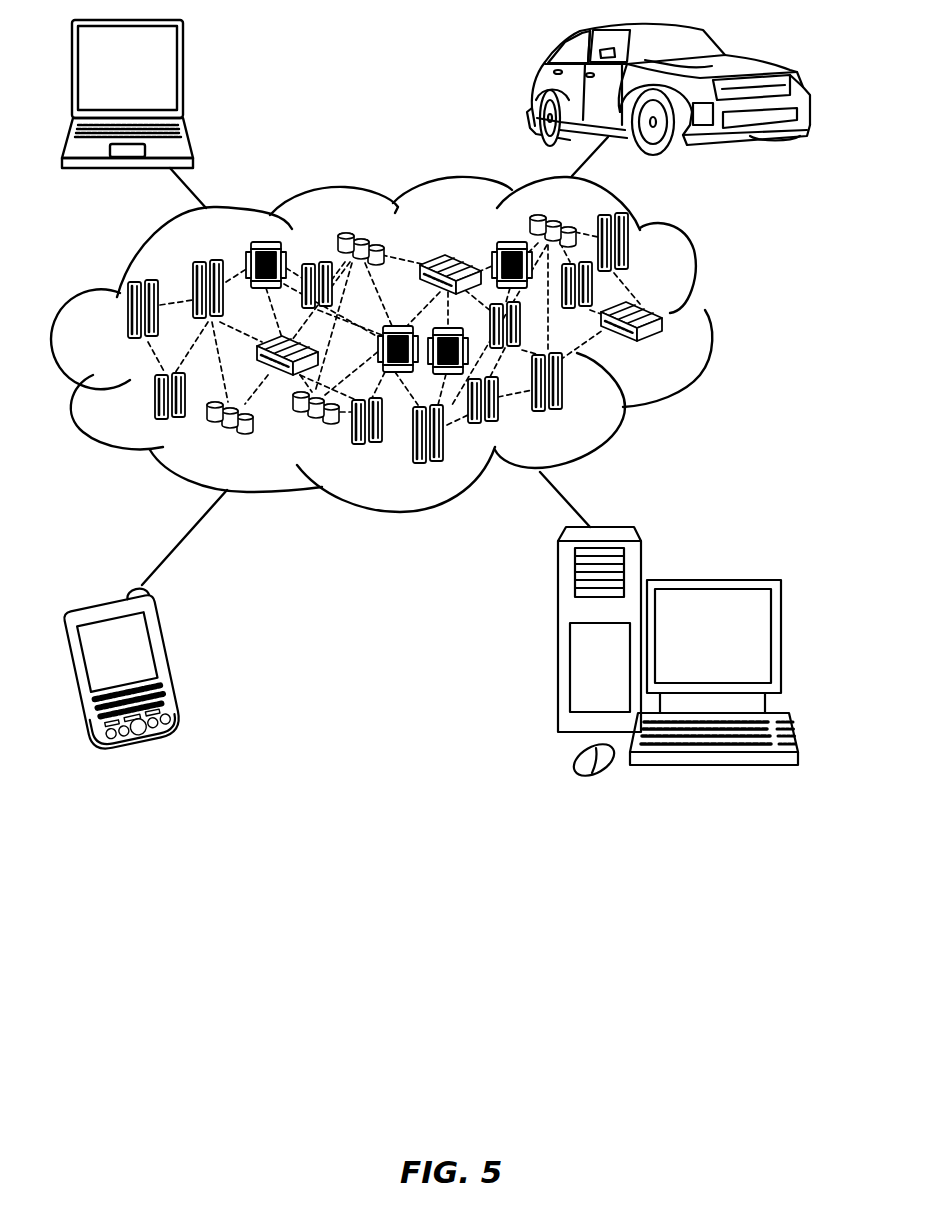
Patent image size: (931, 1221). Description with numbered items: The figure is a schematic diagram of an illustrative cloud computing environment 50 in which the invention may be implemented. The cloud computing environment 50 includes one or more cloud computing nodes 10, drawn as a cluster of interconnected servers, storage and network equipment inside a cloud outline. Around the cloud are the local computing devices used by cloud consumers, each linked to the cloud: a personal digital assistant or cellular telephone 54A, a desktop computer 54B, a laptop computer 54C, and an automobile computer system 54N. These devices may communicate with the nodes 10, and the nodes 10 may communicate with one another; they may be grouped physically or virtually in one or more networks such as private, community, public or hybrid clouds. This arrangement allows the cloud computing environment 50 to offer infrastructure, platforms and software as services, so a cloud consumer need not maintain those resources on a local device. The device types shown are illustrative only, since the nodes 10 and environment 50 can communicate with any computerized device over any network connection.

The cloud computing node 10 is at (666, 352).
The cloud computing environment 50 is at (712, 318).
The personal digital assistant or cellular telephone 54A is at (176, 663).
The desktop computer 54B is at (710, 579).
The laptop computer 54C is at (184, 76).
The automobile computer system 54N is at (533, 88).